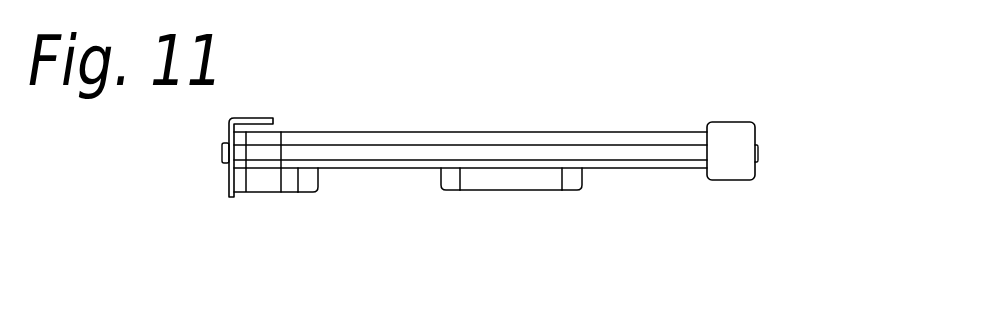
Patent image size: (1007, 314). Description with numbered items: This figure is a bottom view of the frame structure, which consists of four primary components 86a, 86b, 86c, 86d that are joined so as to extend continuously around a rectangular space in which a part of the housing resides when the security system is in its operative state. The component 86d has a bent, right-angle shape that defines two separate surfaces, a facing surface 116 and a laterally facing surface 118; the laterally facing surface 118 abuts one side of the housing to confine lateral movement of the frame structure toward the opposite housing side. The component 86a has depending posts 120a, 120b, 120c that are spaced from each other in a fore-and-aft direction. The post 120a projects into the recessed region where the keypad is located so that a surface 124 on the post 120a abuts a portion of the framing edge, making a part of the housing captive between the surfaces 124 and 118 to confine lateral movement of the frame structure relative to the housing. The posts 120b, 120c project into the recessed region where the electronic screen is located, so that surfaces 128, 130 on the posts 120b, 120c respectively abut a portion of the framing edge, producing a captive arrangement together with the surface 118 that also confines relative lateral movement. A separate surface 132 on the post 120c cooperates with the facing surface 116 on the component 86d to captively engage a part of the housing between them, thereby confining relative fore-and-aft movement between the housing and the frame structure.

The component 86a is at (523, 191).
The component 86b is at (748, 142).
The component 86c is at (500, 160).
The component 86d is at (229, 131).
The facing surface 116 is at (236, 177).
The laterally facing surface 118 is at (258, 126).
The post 120a is at (577, 191).
The post 120b is at (437, 176).
The post 120c is at (312, 168).
The surface 124 is at (573, 168).
The surface 128 is at (450, 168).
The surface 130 is at (310, 168).
The surface 132 is at (298, 177).